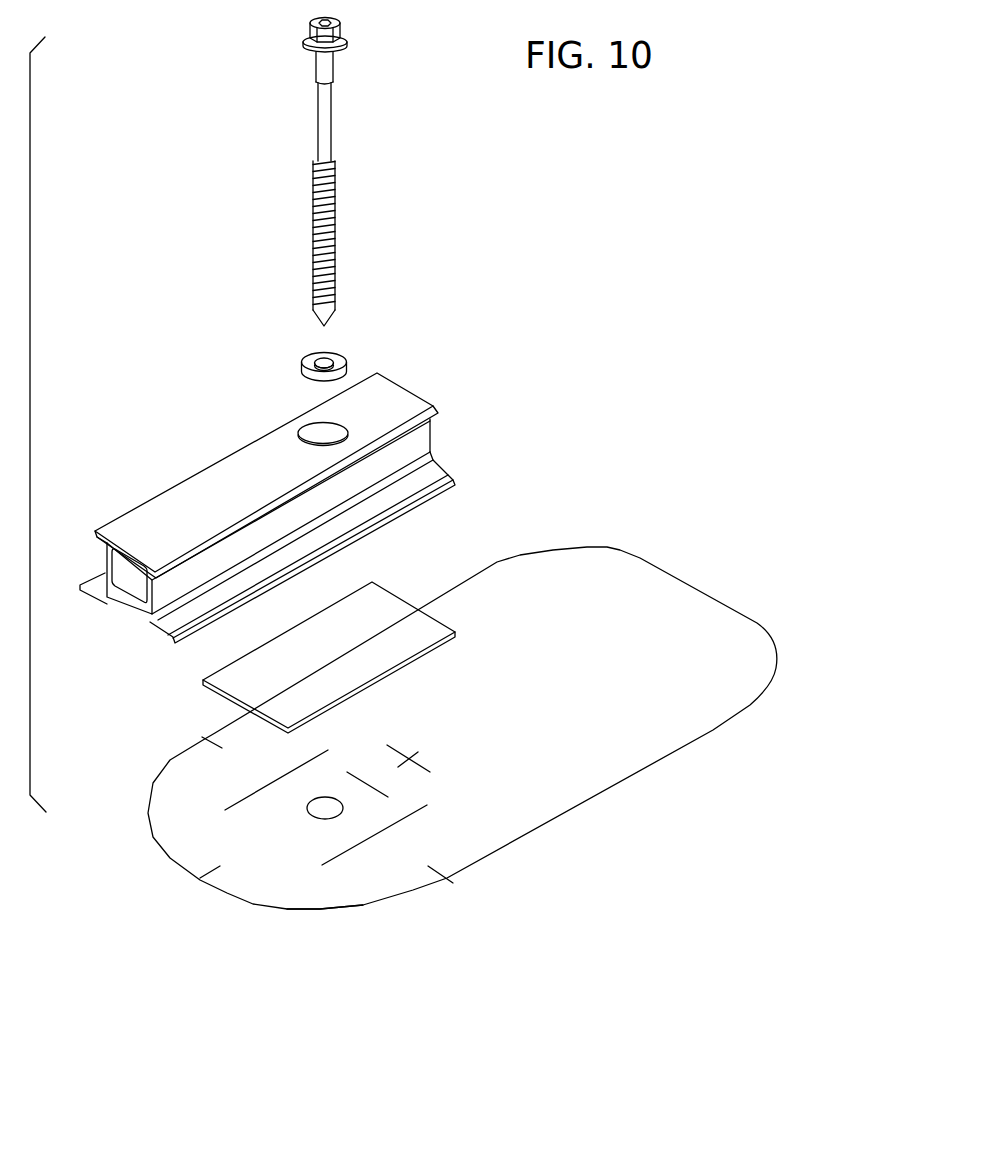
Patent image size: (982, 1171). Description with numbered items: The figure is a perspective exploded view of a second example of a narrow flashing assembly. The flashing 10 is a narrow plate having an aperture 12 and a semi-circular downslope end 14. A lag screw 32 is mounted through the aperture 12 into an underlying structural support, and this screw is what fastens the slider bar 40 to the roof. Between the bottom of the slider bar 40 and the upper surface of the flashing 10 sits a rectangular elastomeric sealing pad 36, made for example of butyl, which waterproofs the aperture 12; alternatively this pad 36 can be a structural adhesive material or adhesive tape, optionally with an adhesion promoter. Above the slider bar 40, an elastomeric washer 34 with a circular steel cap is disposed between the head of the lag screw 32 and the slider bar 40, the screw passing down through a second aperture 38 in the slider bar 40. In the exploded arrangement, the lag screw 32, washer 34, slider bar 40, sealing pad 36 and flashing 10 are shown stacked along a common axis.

The flashing 10 is at (464, 753).
The aperture 12 is at (322, 808).
The semi-circular downslope end 14 is at (318, 912).
The lag screw 32 is at (313, 105).
The washer 34 is at (308, 358).
The sealing pad 36 is at (207, 678).
The second aperture 38 is at (317, 438).
The slider bar 40 is at (304, 485).